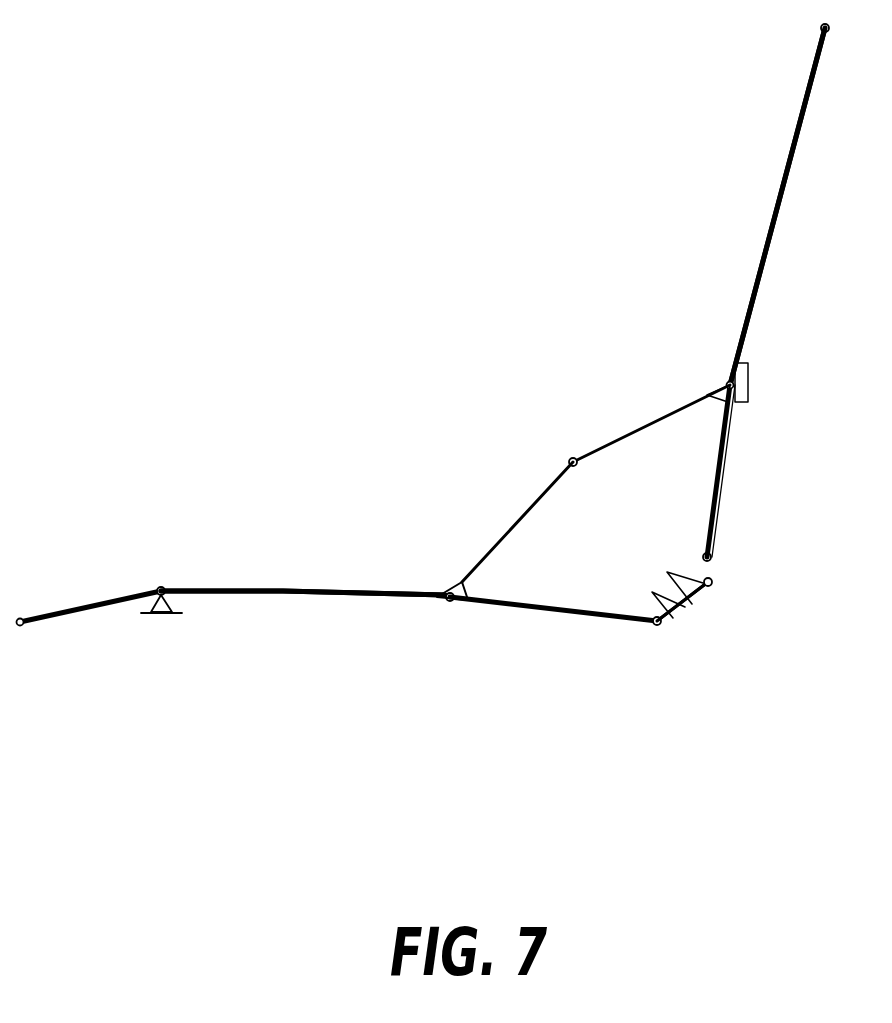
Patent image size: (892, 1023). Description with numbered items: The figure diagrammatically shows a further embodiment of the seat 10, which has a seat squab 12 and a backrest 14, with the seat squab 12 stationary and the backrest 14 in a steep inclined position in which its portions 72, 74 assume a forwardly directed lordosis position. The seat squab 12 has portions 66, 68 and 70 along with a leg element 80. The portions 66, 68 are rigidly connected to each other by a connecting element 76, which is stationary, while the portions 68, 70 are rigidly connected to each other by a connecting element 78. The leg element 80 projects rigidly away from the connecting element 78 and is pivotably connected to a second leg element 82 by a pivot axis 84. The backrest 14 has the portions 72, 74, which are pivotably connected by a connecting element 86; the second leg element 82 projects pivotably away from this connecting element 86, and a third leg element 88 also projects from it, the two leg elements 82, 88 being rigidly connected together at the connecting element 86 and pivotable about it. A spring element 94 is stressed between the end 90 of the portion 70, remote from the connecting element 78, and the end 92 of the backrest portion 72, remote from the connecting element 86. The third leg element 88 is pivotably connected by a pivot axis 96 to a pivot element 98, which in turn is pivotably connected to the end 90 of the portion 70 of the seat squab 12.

The seat 10 is at (453, 292).
The seat squab 12 is at (341, 604).
The backrest 14 is at (748, 282).
The portion of the seat squab 66 is at (97, 603).
The portion of the seat squab 68 is at (283, 590).
The portion of the seat squab 70 is at (558, 613).
The portion of the backrest 72 is at (712, 508).
The portion of the backrest 74 is at (780, 213).
The connecting element 76 is at (161, 587).
The connecting element 78 is at (448, 603).
The leg element 80 is at (510, 527).
The second leg element 82 is at (642, 427).
The pivot axis 84 is at (573, 458).
The connecting element 86 is at (750, 396).
The third leg element 88 is at (722, 492).
The end of the portion of the seat squab 90 is at (657, 625).
The end of the backrest portion 92 is at (705, 555).
The spring element 94 is at (703, 610).
The pivot axis 96 is at (713, 584).
The pivot element 98 is at (673, 614).